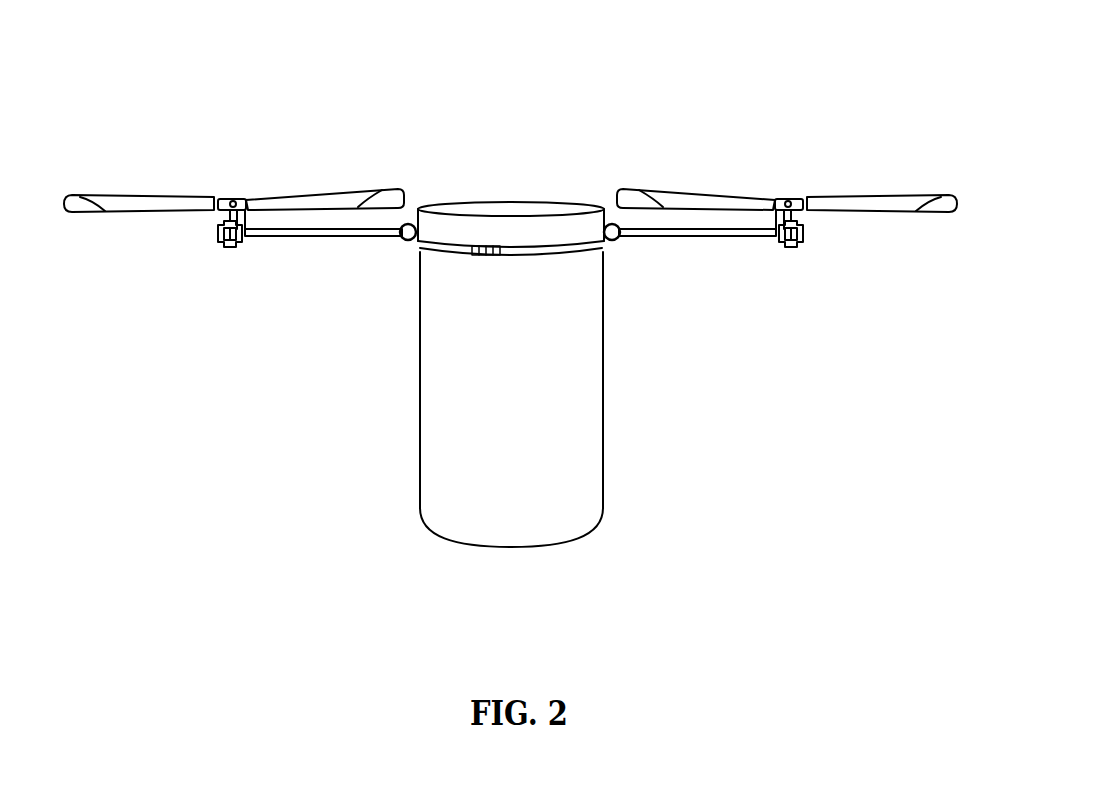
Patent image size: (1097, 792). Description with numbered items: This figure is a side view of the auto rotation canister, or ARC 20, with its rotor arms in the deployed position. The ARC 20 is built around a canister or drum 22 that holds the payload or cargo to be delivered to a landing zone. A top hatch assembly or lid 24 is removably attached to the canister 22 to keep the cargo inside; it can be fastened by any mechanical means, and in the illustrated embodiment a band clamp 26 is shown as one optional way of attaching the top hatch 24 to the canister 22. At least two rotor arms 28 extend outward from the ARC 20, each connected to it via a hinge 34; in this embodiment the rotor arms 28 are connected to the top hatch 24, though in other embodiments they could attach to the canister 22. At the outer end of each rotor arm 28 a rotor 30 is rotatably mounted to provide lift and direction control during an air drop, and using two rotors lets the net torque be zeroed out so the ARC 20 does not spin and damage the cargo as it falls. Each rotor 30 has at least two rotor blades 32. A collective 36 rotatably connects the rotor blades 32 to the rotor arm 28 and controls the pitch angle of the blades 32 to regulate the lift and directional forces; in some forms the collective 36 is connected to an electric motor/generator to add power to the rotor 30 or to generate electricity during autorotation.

The auto rotation canister (ARC) 20 is at (606, 483).
The canister or drum 22 is at (432, 468).
The top hatch assembly or lid 24 is at (496, 212).
The band clamp 26 is at (533, 252).
The rotor arm 28 is at (331, 232).
The rotor 30 is at (184, 62).
The rotor blade 32 is at (119, 198).
The hinge 34 is at (404, 222).
The collective 36 is at (222, 237).